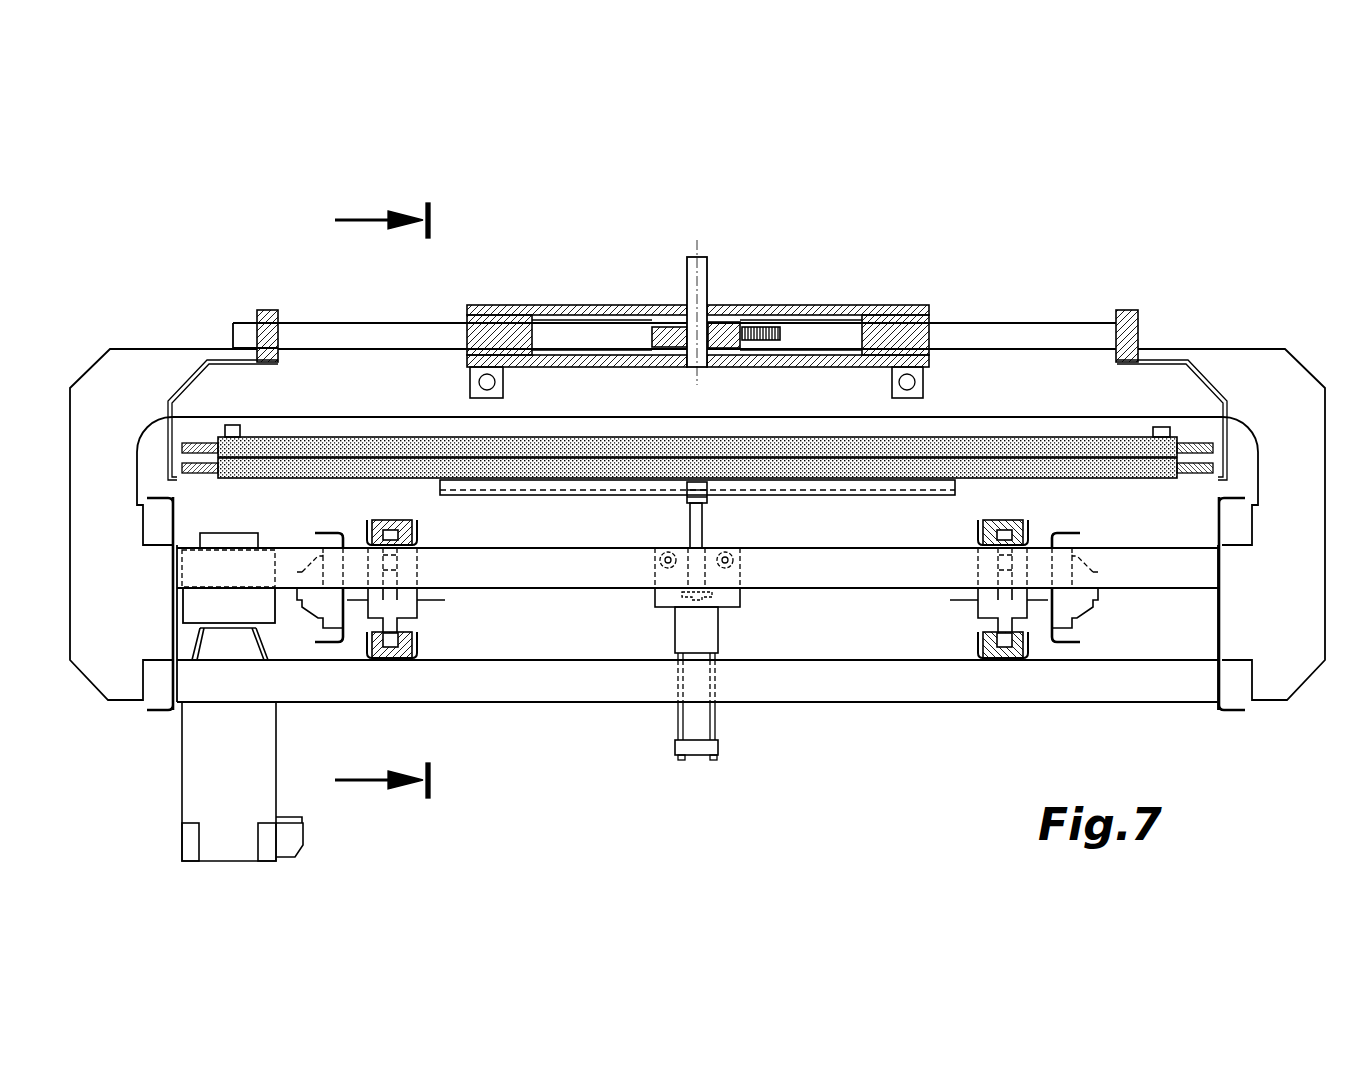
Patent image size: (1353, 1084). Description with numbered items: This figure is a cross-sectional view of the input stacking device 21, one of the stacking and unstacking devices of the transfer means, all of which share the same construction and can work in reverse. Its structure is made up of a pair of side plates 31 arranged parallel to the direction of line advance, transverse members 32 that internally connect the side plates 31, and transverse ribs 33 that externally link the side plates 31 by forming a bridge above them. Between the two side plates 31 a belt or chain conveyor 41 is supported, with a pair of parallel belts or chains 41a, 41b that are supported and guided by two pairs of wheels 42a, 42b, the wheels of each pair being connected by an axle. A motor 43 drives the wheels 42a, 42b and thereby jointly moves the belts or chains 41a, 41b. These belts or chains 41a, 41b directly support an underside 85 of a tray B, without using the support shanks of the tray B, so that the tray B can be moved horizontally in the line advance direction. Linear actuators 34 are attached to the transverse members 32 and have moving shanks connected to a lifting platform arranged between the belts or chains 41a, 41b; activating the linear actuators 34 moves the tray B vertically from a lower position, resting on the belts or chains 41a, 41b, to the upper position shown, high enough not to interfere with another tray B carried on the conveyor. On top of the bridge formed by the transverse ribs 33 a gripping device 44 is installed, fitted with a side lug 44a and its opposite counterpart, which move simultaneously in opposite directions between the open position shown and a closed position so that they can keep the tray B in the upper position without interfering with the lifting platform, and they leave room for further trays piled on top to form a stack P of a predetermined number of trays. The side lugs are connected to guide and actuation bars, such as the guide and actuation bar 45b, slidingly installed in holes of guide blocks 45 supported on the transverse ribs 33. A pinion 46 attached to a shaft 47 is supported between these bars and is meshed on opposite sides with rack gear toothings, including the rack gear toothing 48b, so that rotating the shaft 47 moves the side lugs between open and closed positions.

The input stacking device 21 is at (955, 214).
The side plates 31 is at (170, 628).
The transverse members 32 is at (1158, 555).
The transverse ribs 33 is at (162, 360).
The linear actuators 34 is at (690, 717).
The belt or chain conveyor 41 is at (963, 613).
The belt or chain 41a is at (390, 520).
The belt or chain 41b is at (1005, 518).
The wheels 42a is at (367, 615).
The wheels 42b is at (1027, 620).
The motor 43 is at (192, 793).
The gripping device 44 is at (785, 278).
The side lug 44a is at (162, 437).
The guide blocks 45 is at (500, 322).
The guide and actuation bar 45b is at (1027, 332).
The pinion 46 is at (668, 330).
The shaft 47 is at (700, 273).
The rack gear toothing 48b is at (757, 343).
The underside 85 is at (993, 480).
The tray B is at (1028, 447).
The stack P is at (365, 430).